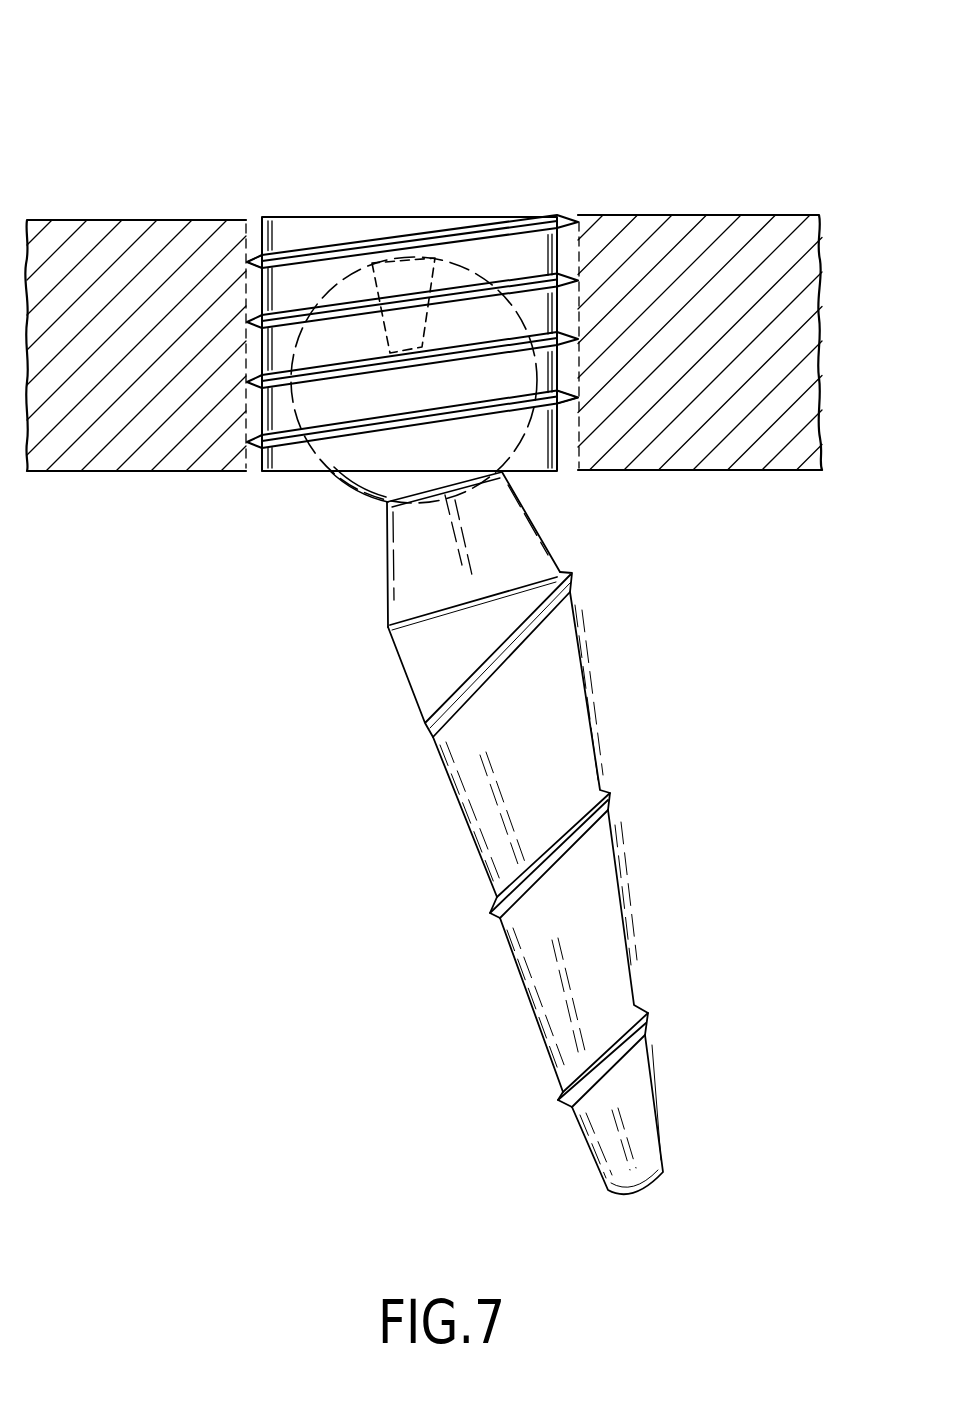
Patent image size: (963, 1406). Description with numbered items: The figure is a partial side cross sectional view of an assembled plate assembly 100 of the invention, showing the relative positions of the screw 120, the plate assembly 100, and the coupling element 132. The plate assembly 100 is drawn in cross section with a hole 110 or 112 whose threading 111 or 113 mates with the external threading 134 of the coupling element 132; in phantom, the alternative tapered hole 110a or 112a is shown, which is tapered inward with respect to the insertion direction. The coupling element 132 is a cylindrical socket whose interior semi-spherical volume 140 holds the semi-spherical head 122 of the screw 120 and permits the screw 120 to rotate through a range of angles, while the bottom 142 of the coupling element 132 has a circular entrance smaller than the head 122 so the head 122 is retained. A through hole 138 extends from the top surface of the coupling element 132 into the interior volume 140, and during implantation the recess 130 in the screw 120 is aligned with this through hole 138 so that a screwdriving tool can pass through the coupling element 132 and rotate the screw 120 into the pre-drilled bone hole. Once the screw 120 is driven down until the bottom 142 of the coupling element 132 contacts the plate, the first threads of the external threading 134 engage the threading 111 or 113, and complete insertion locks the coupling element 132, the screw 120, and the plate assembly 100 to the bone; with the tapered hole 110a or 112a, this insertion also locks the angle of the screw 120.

The plate assembly 100 is at (143, 200).
The hole 110 is at (258, 216).
The hole 112 is at (567, 216).
The tapered hole 110a is at (233, 242).
The tapered hole 112a is at (587, 255).
The threading 111 is at (578, 397).
The threading 113 is at (693, 456).
The screw 120 is at (355, 585).
The head portion 122 is at (433, 405).
The recess 130 is at (377, 263).
The coupling element 132 is at (228, 207).
The external threading 134 is at (277, 468).
The through hole 138 is at (408, 258).
The interior semi-spherical volume 140 is at (458, 250).
The bottom 142 is at (533, 472).